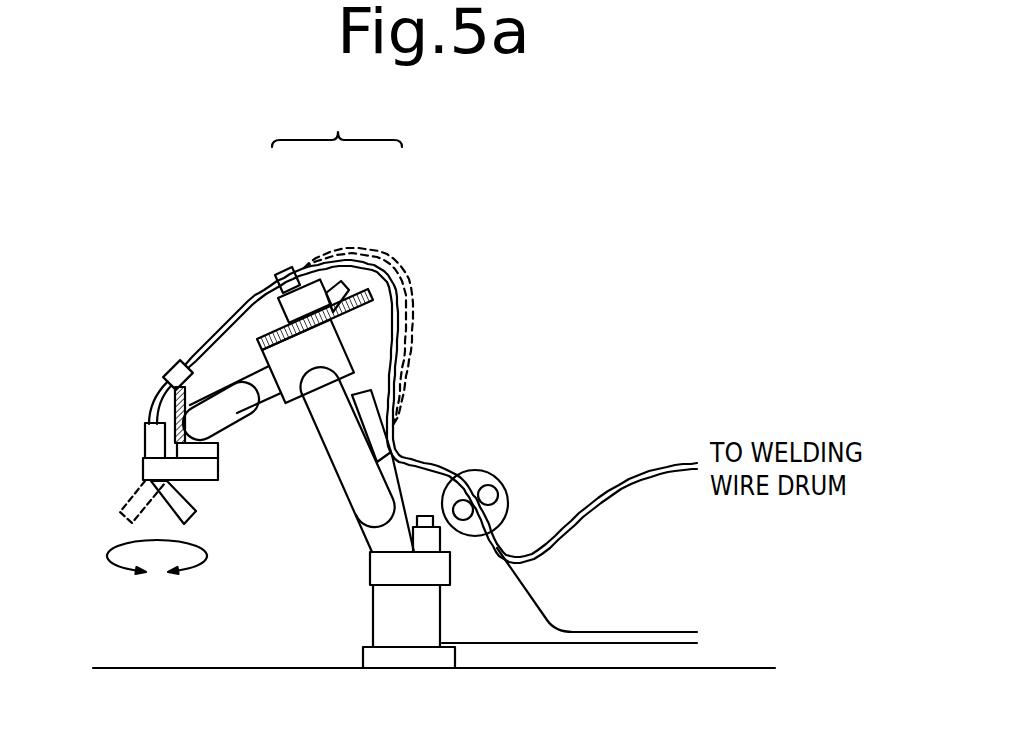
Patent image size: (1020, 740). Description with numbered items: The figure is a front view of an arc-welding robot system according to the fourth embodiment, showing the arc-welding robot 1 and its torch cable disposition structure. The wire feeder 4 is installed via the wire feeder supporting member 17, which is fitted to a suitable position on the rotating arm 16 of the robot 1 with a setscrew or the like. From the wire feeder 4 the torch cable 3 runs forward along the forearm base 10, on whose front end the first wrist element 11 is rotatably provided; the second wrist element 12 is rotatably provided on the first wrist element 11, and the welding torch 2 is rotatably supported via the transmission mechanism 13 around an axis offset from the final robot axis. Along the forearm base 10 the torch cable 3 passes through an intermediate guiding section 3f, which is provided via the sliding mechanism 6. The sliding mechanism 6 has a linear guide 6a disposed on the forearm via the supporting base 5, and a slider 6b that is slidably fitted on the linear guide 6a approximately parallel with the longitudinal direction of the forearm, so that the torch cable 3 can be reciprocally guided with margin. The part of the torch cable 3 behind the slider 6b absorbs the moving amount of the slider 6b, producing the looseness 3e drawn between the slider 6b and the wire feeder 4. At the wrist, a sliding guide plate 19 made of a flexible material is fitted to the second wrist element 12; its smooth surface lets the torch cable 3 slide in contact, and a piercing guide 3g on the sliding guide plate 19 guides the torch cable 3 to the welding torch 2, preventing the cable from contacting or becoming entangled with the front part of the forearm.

The arc-welding robot 1 is at (325, 556).
The welding torch 2 is at (145, 442).
The torch cable 3 is at (207, 350).
The looseness 3e is at (408, 274).
The intermediate guiding section 3f is at (284, 271).
The piercing guide 3g is at (165, 372).
The wire feeder 4 is at (482, 468).
The supporting base 5 is at (267, 333).
The sliding mechanism 6 is at (337, 118).
The linear guide 6a is at (367, 268).
The slider 6b is at (313, 290).
The forearm base 10 is at (330, 350).
The first wrist element 11 is at (237, 423).
The second wrist element 12 is at (218, 483).
The transmission mechanism 13 is at (193, 474).
The rotating arm 16 is at (437, 573).
The wire feeder supporting member 17 is at (450, 538).
The sliding guide plate 19 is at (178, 415).